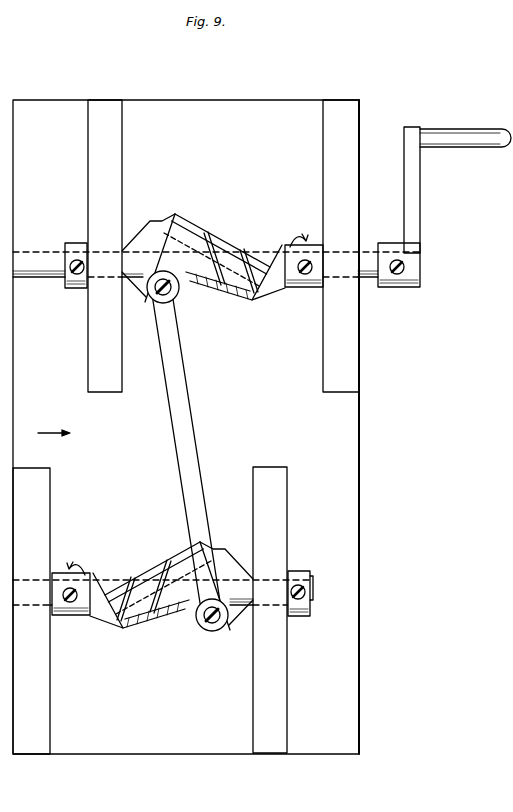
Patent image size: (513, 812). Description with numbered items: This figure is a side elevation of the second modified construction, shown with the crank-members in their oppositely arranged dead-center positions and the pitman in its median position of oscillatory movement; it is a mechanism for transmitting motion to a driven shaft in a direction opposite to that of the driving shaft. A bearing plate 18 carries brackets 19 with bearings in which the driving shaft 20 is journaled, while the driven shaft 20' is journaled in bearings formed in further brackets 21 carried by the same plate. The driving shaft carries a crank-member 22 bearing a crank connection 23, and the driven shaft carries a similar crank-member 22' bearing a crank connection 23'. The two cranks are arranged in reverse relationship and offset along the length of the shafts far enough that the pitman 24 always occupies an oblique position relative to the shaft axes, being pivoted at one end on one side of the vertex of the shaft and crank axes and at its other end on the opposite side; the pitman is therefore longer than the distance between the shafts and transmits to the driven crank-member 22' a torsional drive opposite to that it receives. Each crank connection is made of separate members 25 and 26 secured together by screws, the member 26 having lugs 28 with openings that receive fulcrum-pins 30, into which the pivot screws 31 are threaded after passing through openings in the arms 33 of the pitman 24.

The bearing plate 18 is at (350, 515).
The brackets 19 is at (98, 107).
The brackets 21 is at (40, 673).
The driving shaft 20 is at (216, 256).
The driven shaft 20' is at (178, 589).
The crank-member 22 is at (196, 250).
The crank-member 22' is at (171, 598).
The crank connection 23 is at (218, 250).
The crank connection 23' is at (153, 577).
The pitman 24 is at (187, 427).
The member 25 is at (247, 256).
The member 26 is at (238, 301).
The lugs 28 is at (181, 285).
The fulcrum-pins 30 is at (205, 630).
The pivot screws 31 is at (157, 295).
The arms 33 is at (172, 318).